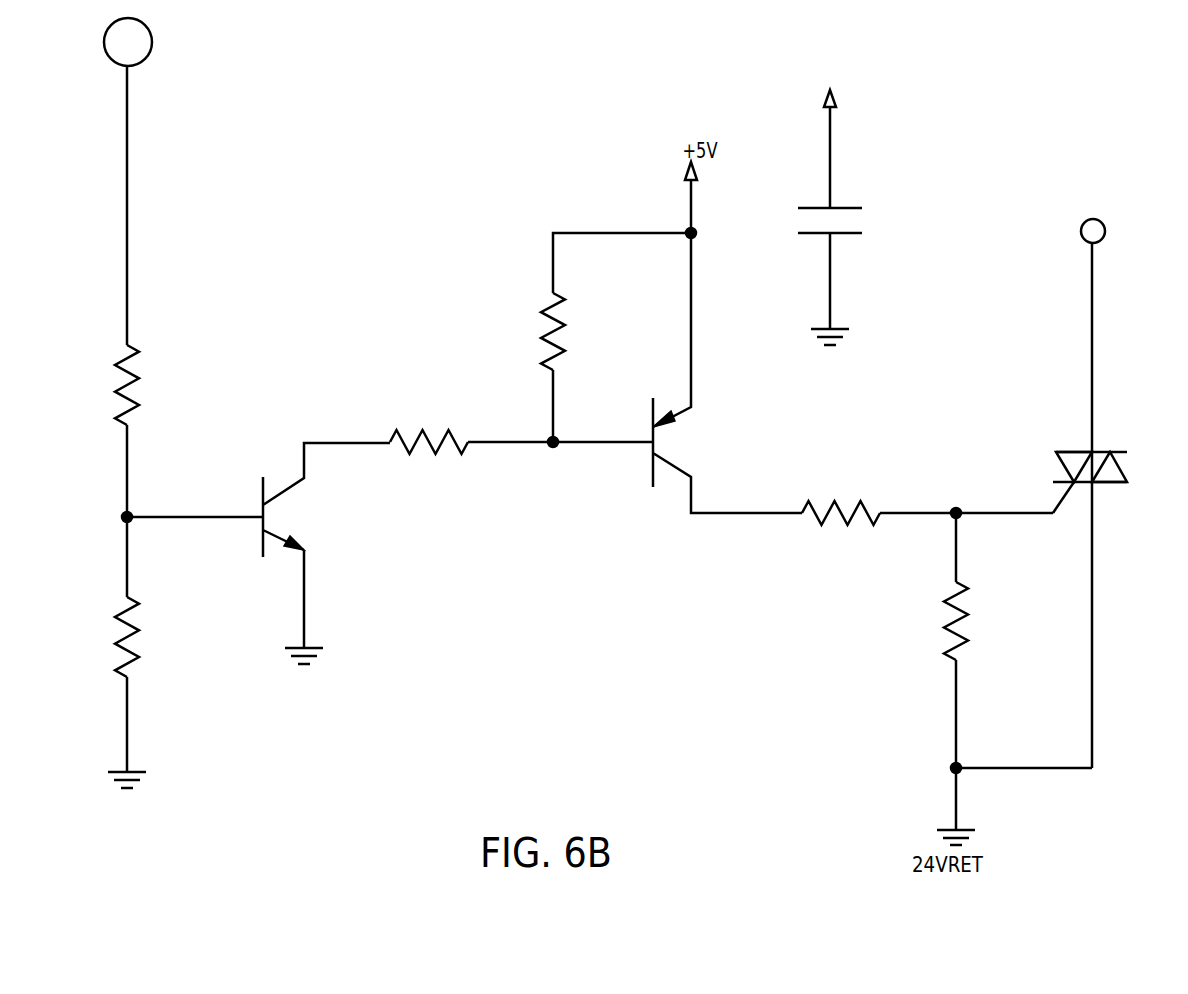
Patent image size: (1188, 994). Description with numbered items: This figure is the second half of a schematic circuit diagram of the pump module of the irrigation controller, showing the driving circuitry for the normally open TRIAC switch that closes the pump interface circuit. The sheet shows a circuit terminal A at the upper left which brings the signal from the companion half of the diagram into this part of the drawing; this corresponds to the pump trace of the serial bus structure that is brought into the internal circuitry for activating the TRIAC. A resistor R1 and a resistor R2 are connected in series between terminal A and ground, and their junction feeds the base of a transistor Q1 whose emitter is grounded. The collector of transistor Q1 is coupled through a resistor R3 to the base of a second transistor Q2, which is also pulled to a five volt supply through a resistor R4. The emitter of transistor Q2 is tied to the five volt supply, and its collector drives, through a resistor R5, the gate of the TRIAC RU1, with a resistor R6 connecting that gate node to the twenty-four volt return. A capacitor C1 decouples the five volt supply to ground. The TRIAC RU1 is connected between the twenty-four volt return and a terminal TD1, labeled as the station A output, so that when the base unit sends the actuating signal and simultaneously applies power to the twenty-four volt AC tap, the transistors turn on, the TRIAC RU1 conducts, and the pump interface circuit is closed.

The terminal A is at (128, 42).
The resistor R1 is at (145, 385).
The resistor R2 is at (145, 637).
The resistor R3 is at (429, 427).
The resistor R4 is at (616, 337).
The resistor R5 is at (841, 499).
The resistor R6 is at (969, 640).
The transistor Q1 is at (258, 500).
The transistor Q2 is at (727, 373).
The capacitor C1 is at (845, 204).
The terminal TD1 (STA A) TD1 is at (1104, 230).
The triac RU1 is at (1098, 466).